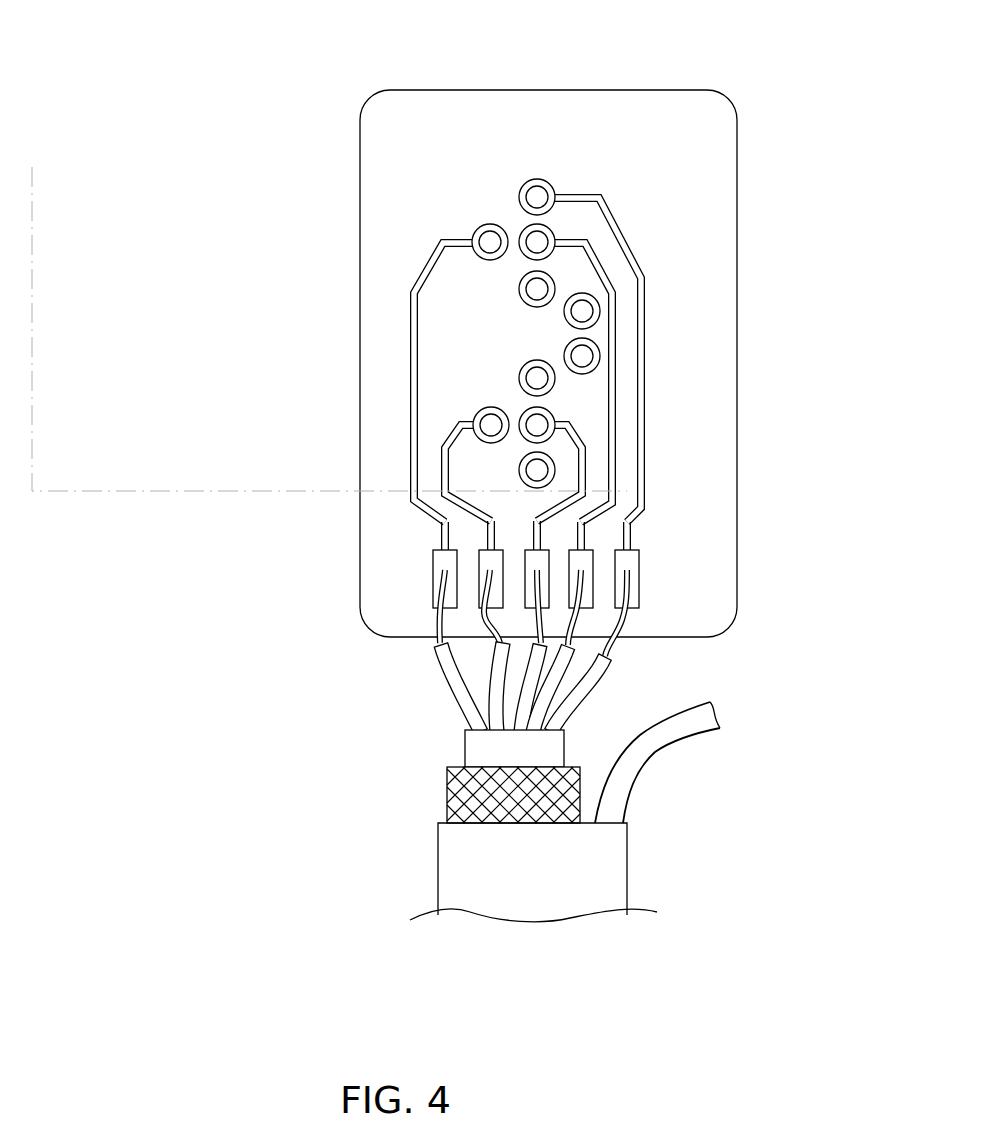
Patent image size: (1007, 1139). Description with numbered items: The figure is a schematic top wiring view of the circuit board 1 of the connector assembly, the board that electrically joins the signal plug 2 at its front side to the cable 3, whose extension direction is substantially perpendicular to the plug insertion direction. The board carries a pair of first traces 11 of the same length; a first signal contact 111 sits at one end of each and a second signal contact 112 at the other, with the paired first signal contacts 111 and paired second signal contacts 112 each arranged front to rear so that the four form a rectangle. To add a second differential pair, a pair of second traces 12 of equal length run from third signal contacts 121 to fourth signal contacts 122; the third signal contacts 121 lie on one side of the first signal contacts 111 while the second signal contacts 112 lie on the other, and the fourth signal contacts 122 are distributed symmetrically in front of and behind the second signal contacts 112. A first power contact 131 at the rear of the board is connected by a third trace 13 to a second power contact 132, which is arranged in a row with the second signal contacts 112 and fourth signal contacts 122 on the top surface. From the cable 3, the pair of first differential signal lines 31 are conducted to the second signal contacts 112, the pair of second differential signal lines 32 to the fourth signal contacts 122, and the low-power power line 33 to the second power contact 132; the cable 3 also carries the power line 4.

The circuit board 1 is at (740, 150).
The signal plug 2 is at (212, 165).
The cable 3 is at (628, 856).
The power line 4 is at (657, 754).
The first traces 11 is at (446, 460).
The second traces 12 is at (410, 358).
The third trace 13 is at (645, 388).
The first differential signal lines 31 is at (445, 677).
The second differential signal lines 32 is at (493, 681).
The low-power power line 33 is at (600, 668).
The first signal contact 111 is at (484, 420).
The second signal contact 112 is at (485, 538).
The third signal contact 121 is at (476, 232).
The fourth signal contact 122 is at (450, 558).
The first power contact 131 is at (537, 192).
The second power contact 132 is at (628, 590).